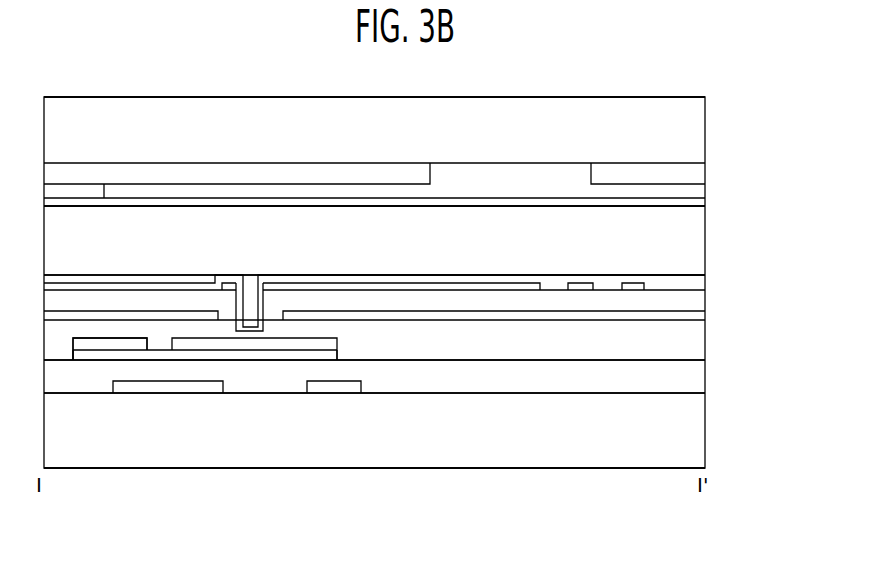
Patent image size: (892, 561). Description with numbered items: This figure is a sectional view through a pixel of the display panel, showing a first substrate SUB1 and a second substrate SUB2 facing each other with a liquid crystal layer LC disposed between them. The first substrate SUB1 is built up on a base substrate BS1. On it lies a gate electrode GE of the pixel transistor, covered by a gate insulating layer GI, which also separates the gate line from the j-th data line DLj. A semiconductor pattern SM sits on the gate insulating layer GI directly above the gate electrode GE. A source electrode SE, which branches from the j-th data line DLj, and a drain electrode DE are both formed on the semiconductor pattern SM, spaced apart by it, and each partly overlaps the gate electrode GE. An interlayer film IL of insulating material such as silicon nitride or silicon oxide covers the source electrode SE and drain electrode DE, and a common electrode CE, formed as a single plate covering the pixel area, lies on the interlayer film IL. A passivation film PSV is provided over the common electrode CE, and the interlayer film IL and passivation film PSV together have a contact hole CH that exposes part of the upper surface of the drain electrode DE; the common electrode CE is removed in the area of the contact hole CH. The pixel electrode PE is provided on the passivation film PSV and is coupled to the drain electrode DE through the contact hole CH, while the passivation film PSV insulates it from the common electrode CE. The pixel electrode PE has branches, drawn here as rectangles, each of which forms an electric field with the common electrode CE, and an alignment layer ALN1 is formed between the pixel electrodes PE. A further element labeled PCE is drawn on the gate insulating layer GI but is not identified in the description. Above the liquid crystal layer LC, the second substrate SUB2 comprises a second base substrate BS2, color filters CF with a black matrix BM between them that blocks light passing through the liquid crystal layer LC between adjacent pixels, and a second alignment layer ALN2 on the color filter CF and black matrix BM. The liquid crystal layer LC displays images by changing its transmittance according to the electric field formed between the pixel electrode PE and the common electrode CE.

The second base substrate BS2 is at (700, 137).
The black matrix BM is at (700, 175).
The color filter CF is at (704, 190).
The second alignment layer ALN2 is at (700, 202).
The second substrate SUB2 is at (771, 230).
The liquid crystal layer LC is at (700, 247).
The alignment layer ALN1 is at (700, 283).
The pixel electrode PE is at (458, 286).
The contact hole CH is at (250, 270).
The passivation film PSV is at (700, 300).
The common electrode CE is at (700, 318).
The interlayer film IL is at (700, 347).
The gate insulating layer GI is at (700, 383).
The base substrate BS1 is at (700, 435).
The first substrate SUB1 is at (771, 262).
The j-th data line DLj is at (88, 345).
The source electrode SE is at (115, 345).
The semiconductor pattern SM is at (137, 355).
The drain electrode DE is at (253, 345).
The gate electrode GE is at (163, 385).
The pixel common electrode PCE is at (335, 386).